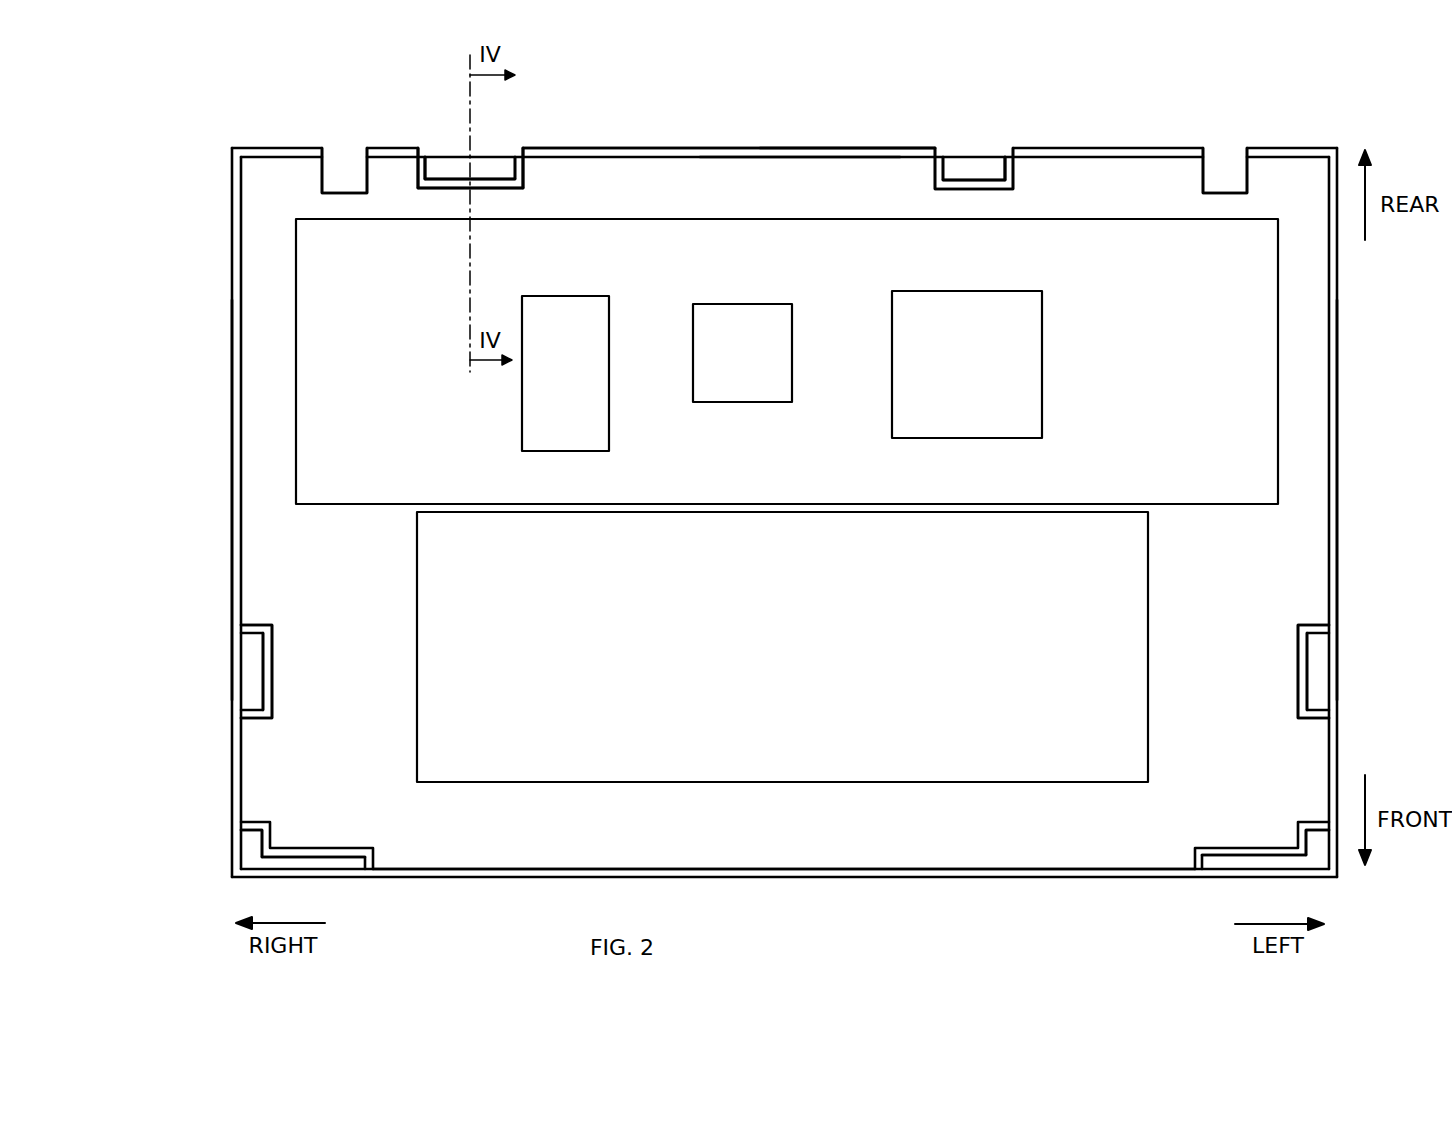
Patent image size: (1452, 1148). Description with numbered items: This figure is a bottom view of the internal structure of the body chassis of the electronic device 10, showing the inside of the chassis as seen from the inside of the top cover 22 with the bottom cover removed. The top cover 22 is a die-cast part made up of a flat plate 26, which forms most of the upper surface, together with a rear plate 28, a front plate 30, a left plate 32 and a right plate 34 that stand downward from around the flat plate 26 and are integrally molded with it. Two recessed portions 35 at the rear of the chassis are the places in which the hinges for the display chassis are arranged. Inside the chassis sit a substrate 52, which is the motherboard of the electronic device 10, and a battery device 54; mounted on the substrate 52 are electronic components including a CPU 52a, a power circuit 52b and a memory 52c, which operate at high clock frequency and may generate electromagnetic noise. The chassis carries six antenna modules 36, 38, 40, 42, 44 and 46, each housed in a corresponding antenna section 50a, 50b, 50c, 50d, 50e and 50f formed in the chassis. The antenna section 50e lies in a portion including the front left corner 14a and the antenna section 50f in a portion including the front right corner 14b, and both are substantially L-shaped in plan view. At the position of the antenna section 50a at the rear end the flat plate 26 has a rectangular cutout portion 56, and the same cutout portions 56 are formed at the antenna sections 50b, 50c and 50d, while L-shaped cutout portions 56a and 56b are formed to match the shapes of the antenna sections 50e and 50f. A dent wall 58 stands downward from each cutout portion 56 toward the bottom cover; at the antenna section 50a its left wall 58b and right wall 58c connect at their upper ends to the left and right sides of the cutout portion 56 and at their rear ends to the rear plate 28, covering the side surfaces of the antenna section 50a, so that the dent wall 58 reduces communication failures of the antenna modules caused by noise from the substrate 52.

The electronic device 10 is at (170, 96).
The front left corner 14a is at (1338, 877).
The front right corner 14b is at (233, 877).
The top cover 22 is at (641, 148).
The flat plate 26 is at (788, 175).
The rear plate 28 is at (848, 153).
The front plate 30 is at (972, 818).
The left plate 32 is at (1340, 490).
The right plate 34 is at (232, 490).
The recessed portion 35 is at (323, 176).
The antenna module 36 is at (450, 163).
The antenna module 38 is at (977, 167).
The antenna module 40 is at (1318, 650).
The antenna module 42 is at (252, 648).
The antenna module 44 is at (1250, 862).
The antenna module 46 is at (308, 862).
The antenna section 50a is at (465, 165).
The antenna section 50b is at (965, 170).
The antenna section 50c is at (1318, 680).
The antenna section 50d is at (248, 680).
The antenna section 50e is at (1223, 862).
The antenna section 50f is at (337, 862).
The substrate 52 is at (1132, 337).
The CPU 52a is at (738, 335).
The power circuit 52b is at (575, 335).
The memory 52c is at (1024, 338).
The battery device 54 is at (786, 760).
The cutout portion 56 is at (489, 176).
The cutout portion 56a is at (1287, 862).
The cutout portion 56b is at (280, 860).
The dent wall 58 is at (453, 183).
The left wall 58b is at (517, 173).
The right wall 58c is at (417, 167).